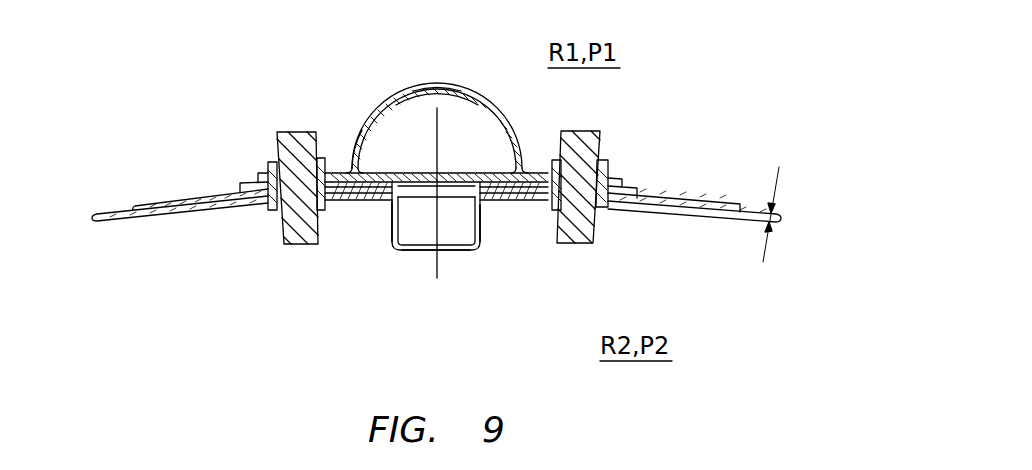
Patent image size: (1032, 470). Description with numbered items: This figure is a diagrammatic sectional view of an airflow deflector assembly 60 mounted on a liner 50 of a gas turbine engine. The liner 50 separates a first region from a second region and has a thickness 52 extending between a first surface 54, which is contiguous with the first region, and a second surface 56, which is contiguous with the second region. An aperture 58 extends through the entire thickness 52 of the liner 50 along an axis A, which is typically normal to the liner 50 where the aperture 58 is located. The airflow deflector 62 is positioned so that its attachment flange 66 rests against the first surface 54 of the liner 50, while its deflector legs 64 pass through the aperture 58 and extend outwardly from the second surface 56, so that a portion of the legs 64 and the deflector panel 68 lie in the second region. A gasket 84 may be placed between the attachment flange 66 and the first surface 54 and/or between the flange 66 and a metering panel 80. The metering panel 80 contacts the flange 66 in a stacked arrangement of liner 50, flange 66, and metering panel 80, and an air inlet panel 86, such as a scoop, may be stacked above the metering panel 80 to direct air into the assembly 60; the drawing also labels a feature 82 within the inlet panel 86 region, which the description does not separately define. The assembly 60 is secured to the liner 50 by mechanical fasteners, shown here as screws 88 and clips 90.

The liner 50 is at (166, 232).
The thickness 52 is at (782, 176).
The first surface 54 is at (113, 215).
The second surface 56 is at (118, 225).
The aperture 58 is at (392, 216).
The airflow deflector assembly 60 is at (371, 251).
The airflow deflector 62 is at (486, 251).
The deflector leg 64 is at (387, 243).
The attachment flange 66 is at (351, 166).
The deflector panel 68 is at (468, 253).
The metering panel 80 is at (382, 172).
The inner surface of dome 82 is at (450, 173).
The gasket 84 is at (162, 205).
The air inlet panel 86 is at (437, 88).
The screw 88 is at (278, 133).
The clip 90 is at (283, 232).
The axis A is at (440, 282).